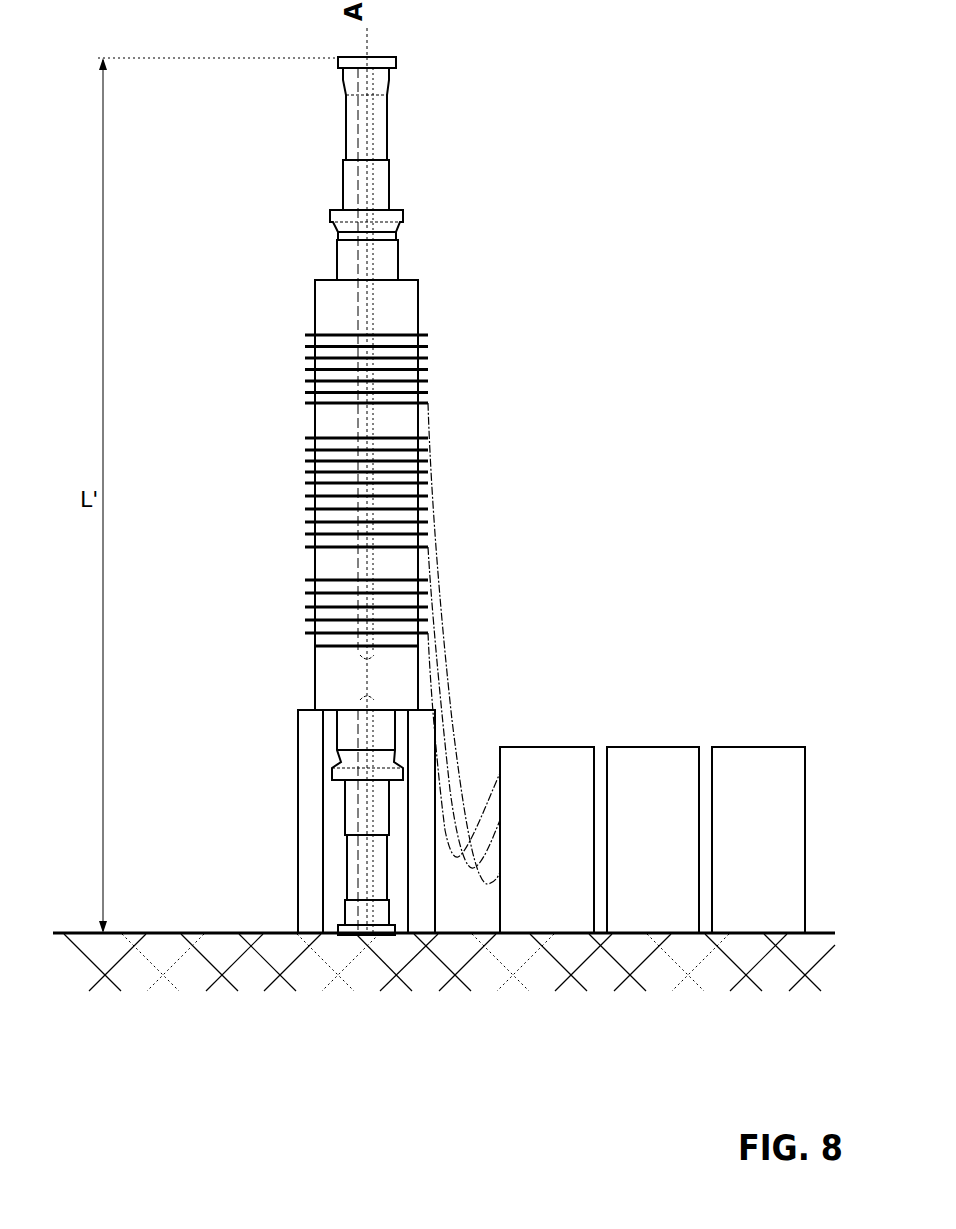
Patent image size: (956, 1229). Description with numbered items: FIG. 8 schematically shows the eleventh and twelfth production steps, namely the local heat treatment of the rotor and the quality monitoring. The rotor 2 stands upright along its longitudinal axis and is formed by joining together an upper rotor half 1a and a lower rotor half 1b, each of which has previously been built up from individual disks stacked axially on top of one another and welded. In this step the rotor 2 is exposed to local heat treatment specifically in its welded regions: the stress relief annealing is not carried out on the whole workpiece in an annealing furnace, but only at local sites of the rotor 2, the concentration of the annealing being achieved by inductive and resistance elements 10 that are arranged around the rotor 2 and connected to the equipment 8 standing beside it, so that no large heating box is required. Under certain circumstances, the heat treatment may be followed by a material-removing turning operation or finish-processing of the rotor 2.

The rotor half 1a is at (348, 260).
The rotor half 1b is at (355, 803).
The rotor 2 is at (298, 513).
The cooling fins 10 is at (434, 357).
The cabinets 8 is at (546, 793).